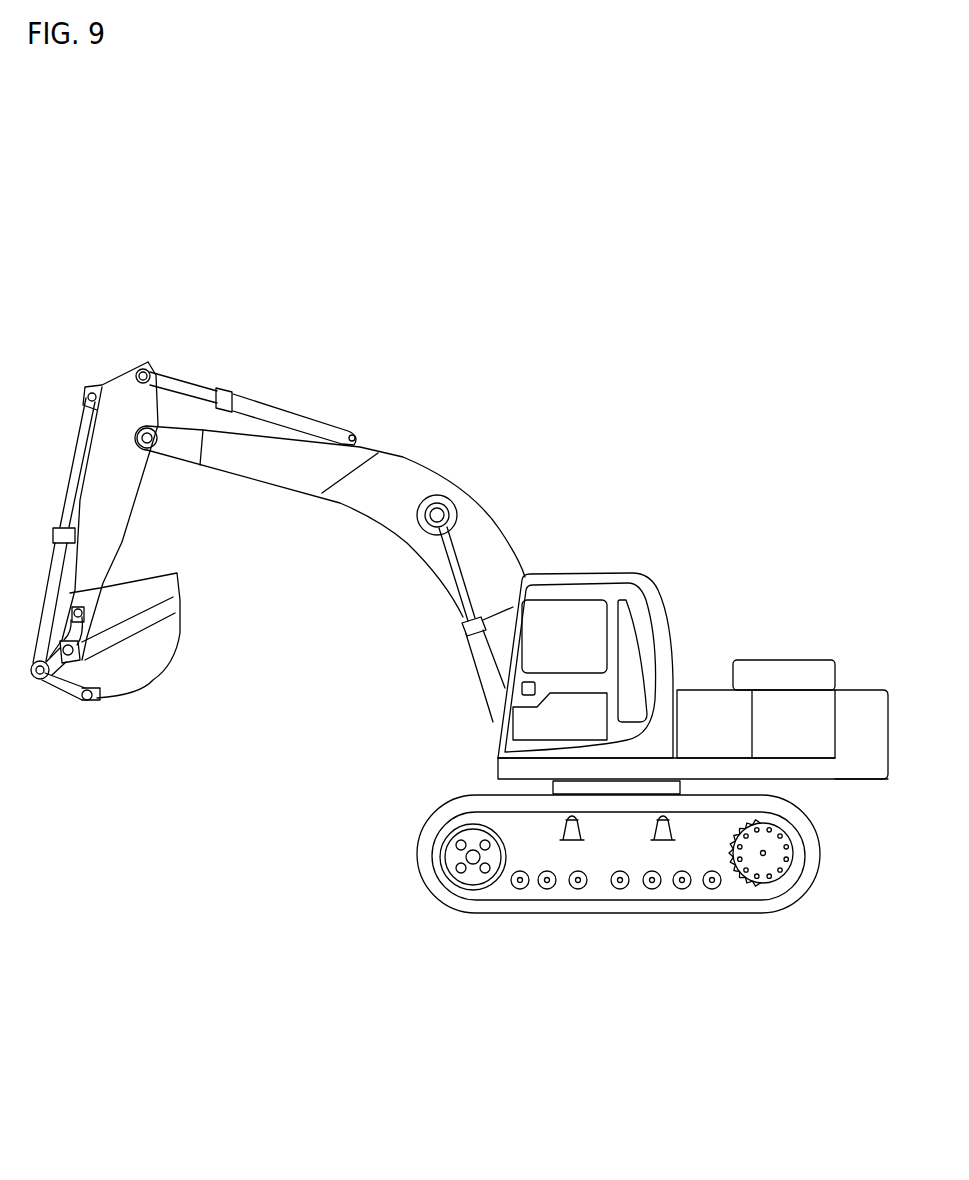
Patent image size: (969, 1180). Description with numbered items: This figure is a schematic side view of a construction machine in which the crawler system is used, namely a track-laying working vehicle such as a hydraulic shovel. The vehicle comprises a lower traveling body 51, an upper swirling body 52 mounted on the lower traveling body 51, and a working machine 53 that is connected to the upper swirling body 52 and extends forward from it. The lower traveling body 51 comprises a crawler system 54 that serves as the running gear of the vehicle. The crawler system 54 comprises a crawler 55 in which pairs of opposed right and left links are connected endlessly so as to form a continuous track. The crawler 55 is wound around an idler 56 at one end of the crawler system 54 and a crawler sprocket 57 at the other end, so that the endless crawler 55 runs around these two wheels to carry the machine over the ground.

The lower traveling body 51 is at (604, 900).
The upper swirling body 52 is at (693, 686).
The working machine 53 is at (438, 463).
The crawler system 54 is at (701, 917).
The crawler 55 is at (603, 916).
The idler 56 is at (467, 882).
The crawler sprocket 57 is at (783, 851).